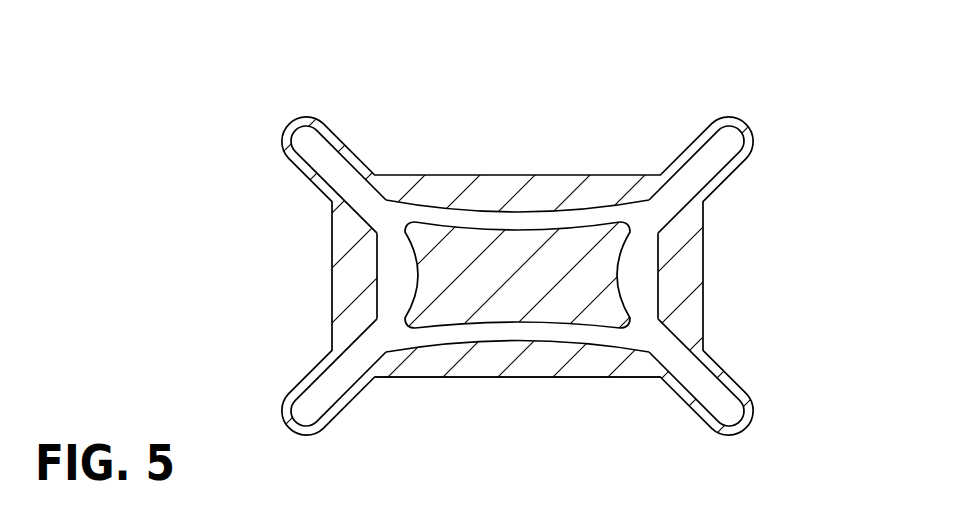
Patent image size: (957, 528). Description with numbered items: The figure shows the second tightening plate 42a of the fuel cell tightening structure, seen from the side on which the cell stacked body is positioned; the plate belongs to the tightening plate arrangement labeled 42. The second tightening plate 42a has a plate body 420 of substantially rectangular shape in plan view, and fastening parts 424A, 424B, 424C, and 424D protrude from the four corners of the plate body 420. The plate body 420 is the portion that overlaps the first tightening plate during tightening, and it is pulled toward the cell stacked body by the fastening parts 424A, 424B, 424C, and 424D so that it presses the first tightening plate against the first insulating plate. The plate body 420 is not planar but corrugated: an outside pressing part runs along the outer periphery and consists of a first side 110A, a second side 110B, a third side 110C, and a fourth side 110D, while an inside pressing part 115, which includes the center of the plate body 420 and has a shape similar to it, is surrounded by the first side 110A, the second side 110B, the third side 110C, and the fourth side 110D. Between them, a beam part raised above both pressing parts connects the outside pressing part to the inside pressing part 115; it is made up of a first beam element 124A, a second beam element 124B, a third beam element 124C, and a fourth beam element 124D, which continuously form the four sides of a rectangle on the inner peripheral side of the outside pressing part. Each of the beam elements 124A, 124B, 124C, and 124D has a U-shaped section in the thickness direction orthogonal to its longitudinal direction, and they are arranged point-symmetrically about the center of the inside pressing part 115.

The seal 42 is at (478, 250).
The second tightening plate 42a is at (766, 112).
The fastening part 424A is at (291, 164).
The fastening part 424B is at (745, 165).
The fastening part 424C is at (743, 380).
The fastening part 424D is at (297, 388).
The first side 110A is at (345, 278).
The second side 110B is at (553, 192).
The third side 110C is at (690, 263).
The fourth side 110D is at (533, 367).
The first beam element 124A is at (390, 292).
The second beam element 124B is at (520, 222).
The third beam element 124C is at (643, 283).
The fourth beam element 124D is at (573, 335).
The inside pressing part 115 is at (480, 267).
The plate body 420 is at (440, 382).